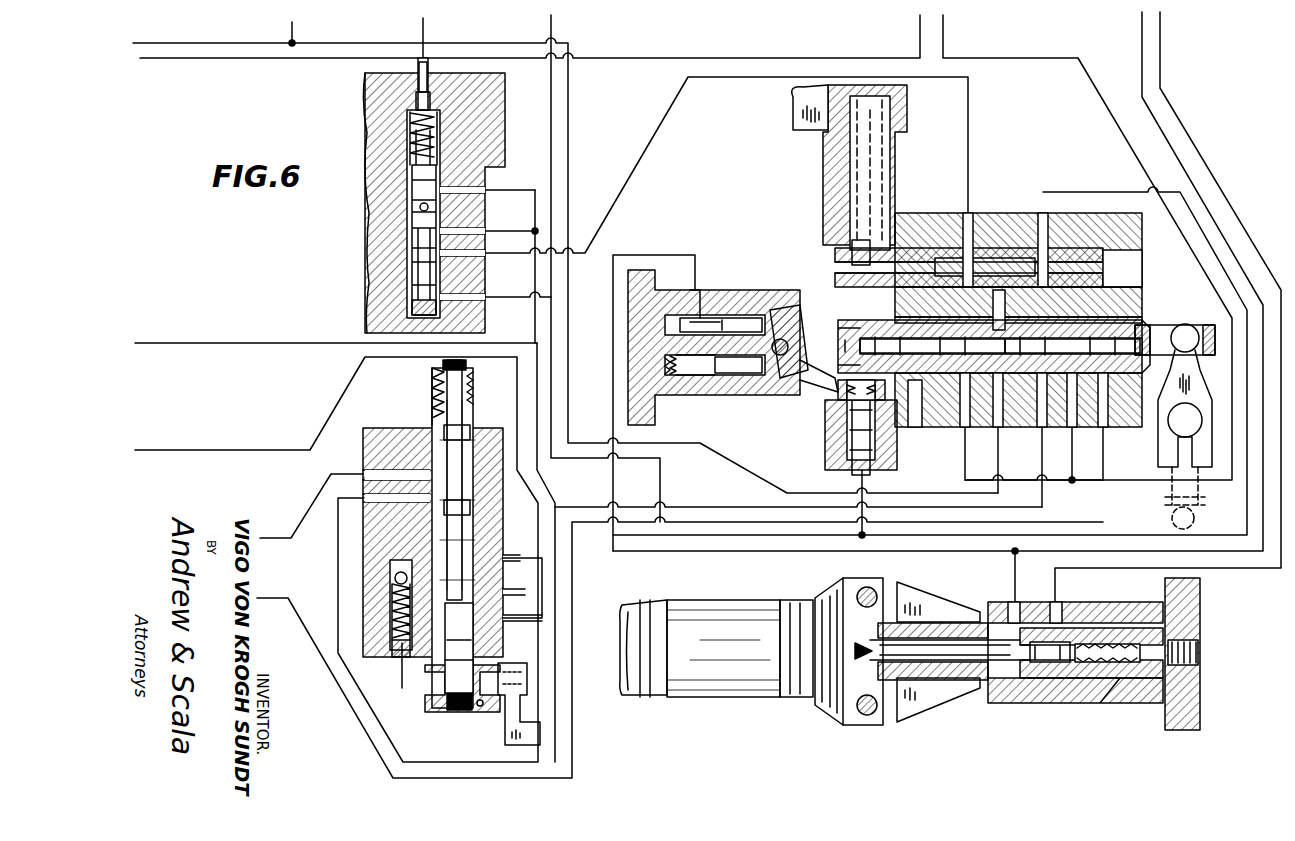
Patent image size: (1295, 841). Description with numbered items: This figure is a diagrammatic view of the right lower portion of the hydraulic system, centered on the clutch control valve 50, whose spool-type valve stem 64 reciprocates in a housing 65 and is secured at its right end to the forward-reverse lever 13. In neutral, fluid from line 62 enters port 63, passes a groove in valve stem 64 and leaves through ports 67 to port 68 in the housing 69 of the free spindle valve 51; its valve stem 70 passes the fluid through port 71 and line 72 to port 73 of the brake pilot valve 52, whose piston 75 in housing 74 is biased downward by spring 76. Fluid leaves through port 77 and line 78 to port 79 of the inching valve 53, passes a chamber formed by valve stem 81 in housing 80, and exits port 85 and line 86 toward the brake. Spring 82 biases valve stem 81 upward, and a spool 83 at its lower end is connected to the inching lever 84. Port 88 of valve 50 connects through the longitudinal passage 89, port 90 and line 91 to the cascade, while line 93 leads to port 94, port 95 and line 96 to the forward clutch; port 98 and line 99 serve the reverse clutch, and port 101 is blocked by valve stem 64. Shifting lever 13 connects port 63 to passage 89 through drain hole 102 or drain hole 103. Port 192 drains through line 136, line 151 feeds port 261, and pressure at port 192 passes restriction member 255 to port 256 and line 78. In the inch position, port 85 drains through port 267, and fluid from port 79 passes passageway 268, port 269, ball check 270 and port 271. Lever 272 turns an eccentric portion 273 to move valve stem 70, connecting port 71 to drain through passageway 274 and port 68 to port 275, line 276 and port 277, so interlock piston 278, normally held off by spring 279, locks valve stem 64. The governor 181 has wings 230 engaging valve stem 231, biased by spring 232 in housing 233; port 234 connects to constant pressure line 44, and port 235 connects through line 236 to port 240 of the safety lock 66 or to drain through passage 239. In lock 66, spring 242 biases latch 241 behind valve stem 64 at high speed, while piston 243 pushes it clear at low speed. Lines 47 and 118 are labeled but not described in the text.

The forward-reverse lever 13 is at (1170, 487).
The constant pressure line 44 is at (1160, 28).
The vent line 47 is at (402, 685).
The clutch control valve 50 is at (1168, 315).
The free spindle valve 51 is at (1152, 272).
The brake pilot valve 52 is at (342, 236).
The inching valve 53 is at (328, 560).
The line 62 is at (943, 28).
The port 63 is at (965, 422).
The valve stem 64 is at (1168, 328).
The housing 65 is at (1147, 325).
The high speed reversing safety lock valve 66 is at (738, 290).
The ports 67 is at (955, 315).
The port 68 is at (1004, 300).
The housing 69 is at (895, 298).
The valve stem 70 is at (835, 278).
The port 71 is at (968, 211).
The line 72 is at (968, 128).
The port 73 is at (485, 260).
The housing 74 is at (505, 123).
The piston 75 is at (412, 272).
The spring 76 is at (438, 120).
The port 77 is at (483, 230).
The line 78 is at (557, 483).
The port 79 is at (510, 620).
The housing 80 is at (408, 426).
The valve stem 81 is at (432, 376).
The spring 82 is at (476, 397).
The spool 83 is at (427, 702).
The inching lever 84 is at (506, 733).
The port 85 is at (506, 592).
The line 86 is at (141, 452).
The port 88 is at (1105, 424).
The longitudinal passage 89 is at (1175, 340).
The port 90 is at (998, 424).
The line 91 is at (140, 50).
The line 93 is at (340, 529).
The port 94 is at (356, 498).
The port 95 is at (360, 474).
The line 96 is at (274, 536).
The port 98 is at (1042, 424).
The line 99 is at (258, 598).
The port 101 is at (1074, 424).
The drain hole 102 is at (932, 346).
The drain hole 103 is at (980, 356).
The conduit 118 is at (140, 58).
The line 136 is at (551, 23).
The line 151 is at (423, 23).
The governor 181 is at (966, 718).
The port 192 is at (485, 300).
The wings 230 is at (918, 598).
The valve stem 231 is at (1013, 608).
The spring 232 is at (1140, 604).
The valve housing 233 is at (1141, 706).
The port 234 is at (1055, 604).
The second port 235 is at (1014, 604).
The line 236 is at (1142, 28).
The passage 239 is at (853, 651).
The port 240 is at (709, 295).
The latch member 241 is at (833, 376).
The biasing spring 242 is at (690, 382).
The piston 243 is at (760, 316).
The restriction member 255 is at (412, 298).
The port 256 is at (481, 190).
The port 261 is at (414, 77).
The port 267 is at (505, 556).
The passageway 268 is at (442, 446).
The port 269 is at (446, 528).
The ball check 270 is at (398, 568).
The port 271 is at (405, 657).
The lever 272 is at (794, 108).
The eccentric portion 273 is at (850, 244).
The passageway 274 is at (990, 265).
The port 275 is at (1043, 212).
The line 276 is at (145, 341).
The port 277 is at (860, 476).
The interlock piston 278 is at (830, 432).
The spring 279 is at (834, 417).